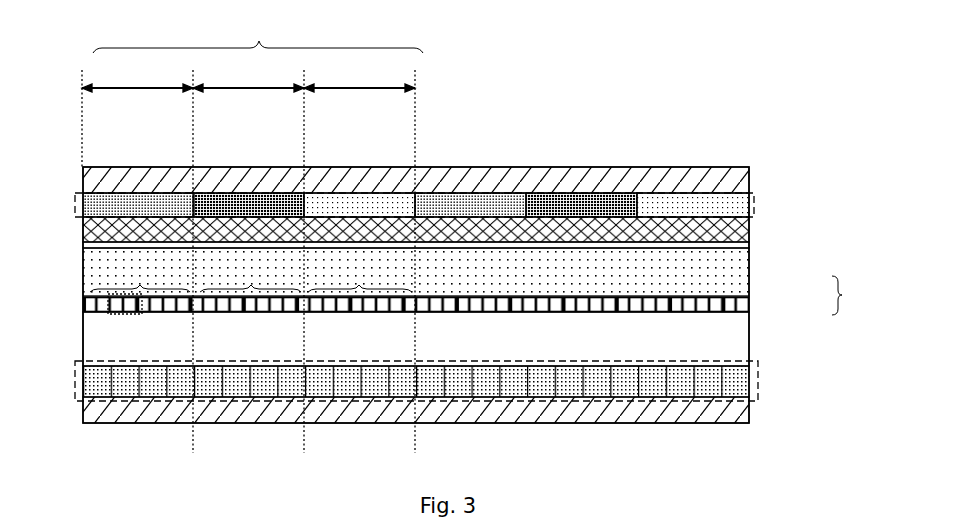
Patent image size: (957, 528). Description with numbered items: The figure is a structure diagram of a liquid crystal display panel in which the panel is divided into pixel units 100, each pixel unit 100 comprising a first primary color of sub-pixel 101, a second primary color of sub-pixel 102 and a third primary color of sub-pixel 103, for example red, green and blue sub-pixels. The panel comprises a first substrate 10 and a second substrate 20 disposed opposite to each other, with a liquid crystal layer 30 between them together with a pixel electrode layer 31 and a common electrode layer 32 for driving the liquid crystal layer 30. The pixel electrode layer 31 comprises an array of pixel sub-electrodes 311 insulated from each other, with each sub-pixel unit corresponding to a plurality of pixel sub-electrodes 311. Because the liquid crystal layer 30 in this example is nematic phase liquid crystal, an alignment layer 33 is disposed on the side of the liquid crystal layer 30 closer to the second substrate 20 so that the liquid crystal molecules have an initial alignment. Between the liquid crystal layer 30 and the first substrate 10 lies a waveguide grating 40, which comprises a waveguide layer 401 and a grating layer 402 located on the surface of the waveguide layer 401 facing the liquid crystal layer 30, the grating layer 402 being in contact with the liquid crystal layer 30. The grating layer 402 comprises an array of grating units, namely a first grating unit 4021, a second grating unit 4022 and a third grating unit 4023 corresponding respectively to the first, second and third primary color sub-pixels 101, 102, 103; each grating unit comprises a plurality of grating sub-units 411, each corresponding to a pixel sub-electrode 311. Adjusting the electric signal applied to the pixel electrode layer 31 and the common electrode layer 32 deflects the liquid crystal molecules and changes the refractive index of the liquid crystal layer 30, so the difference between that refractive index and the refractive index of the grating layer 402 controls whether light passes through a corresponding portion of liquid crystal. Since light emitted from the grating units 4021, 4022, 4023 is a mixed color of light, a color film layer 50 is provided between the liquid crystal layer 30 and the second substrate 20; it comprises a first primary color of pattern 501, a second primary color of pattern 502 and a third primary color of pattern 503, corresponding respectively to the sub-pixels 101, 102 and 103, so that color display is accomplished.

The pixel unit 100 is at (258, 36).
The first primary color of sub-pixel 101 is at (137, 77).
The second primary color of sub-pixel 102 is at (248, 77).
The third primary color of sub-pixel 103 is at (359, 77).
The second substrate 20 is at (749, 172).
The color film layer 50 is at (389, 174).
The first primary color of pattern 501 is at (143, 200).
The second primary color of pattern 502 is at (258, 200).
The third primary color of pattern 503 is at (365, 200).
The common electrode layer 32 is at (749, 231).
The alignment layer 33 is at (83, 245).
The liquid crystal layer 30 is at (749, 273).
The first grating unit 4021 is at (140, 278).
The second grating unit 4022 is at (250, 278).
The third grating unit 4023 is at (360, 278).
The waveguide grating 40 is at (476, 320).
The grating layer 402 is at (749, 306).
The waveguide layer 401 is at (749, 341).
The grating sub-unit 411 is at (112, 314).
The pixel electrode layer 31 is at (758, 386).
The pixel sub-electrode 311 is at (125, 380).
The first substrate 10 is at (749, 413).